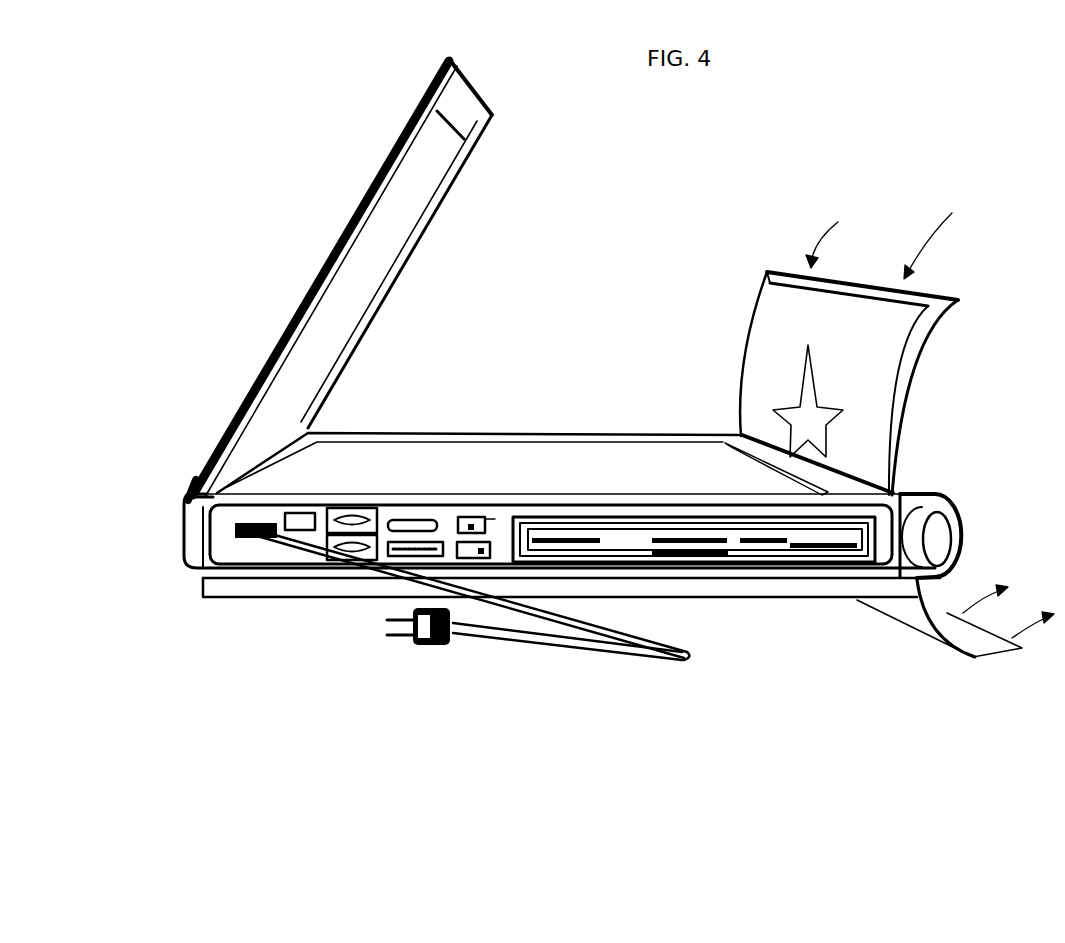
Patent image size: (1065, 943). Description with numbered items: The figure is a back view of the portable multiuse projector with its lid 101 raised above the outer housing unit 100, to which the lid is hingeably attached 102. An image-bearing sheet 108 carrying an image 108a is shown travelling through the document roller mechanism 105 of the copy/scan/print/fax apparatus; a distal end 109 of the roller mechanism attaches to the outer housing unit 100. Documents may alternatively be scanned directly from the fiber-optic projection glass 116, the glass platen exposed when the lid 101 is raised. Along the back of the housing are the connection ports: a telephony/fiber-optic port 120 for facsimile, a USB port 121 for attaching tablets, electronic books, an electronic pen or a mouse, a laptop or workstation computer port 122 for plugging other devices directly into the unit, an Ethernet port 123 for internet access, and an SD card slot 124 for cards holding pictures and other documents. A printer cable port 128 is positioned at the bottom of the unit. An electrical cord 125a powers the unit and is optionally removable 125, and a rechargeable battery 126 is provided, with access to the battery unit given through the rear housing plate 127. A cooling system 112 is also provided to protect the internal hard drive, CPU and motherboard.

The outer housing unit 100 is at (195, 527).
The lid 101 is at (470, 160).
The hinge attachment 102 is at (190, 493).
The document roller mechanism 105 is at (920, 488).
The image-bearing sheet 108 is at (957, 300).
The image 108a is at (825, 425).
The distal end of the document roller mechanism 109 is at (940, 537).
The cooling system 112 is at (765, 592).
The fiber-optic projection glass 116 is at (712, 457).
The telephony/fiber-optic port 120 is at (475, 519).
The USB port 121 is at (360, 537).
The laptop or workstation computer port 122 is at (305, 514).
The Ethernet port 123 is at (490, 541).
The SD card slot 124 is at (417, 520).
The removable cord connection 125 is at (236, 537).
The electrical cord 125a is at (688, 654).
The rechargeable battery 126 is at (685, 519).
The rear housing plate 127 is at (495, 518).
The printer cable port 128 is at (410, 558).